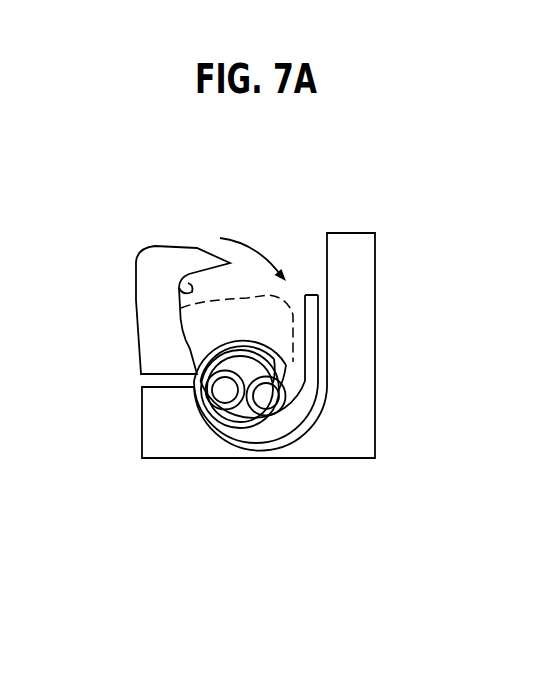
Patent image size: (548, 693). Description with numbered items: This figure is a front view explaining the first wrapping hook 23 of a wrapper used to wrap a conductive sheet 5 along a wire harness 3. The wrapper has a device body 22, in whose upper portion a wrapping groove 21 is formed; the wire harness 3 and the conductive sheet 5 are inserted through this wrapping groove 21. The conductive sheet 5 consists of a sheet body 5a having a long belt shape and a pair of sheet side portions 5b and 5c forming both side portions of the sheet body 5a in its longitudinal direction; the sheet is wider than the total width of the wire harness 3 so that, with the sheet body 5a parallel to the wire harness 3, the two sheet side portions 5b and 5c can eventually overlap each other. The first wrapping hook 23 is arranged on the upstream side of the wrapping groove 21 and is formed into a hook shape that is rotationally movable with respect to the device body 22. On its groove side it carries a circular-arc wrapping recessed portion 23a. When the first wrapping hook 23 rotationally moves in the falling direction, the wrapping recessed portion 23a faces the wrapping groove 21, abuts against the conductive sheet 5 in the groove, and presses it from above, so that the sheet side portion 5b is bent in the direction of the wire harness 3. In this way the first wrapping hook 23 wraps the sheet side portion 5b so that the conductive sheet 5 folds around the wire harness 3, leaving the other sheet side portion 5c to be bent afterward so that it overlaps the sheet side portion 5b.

The wire harness 3 is at (264, 404).
The conductive sheet 5 is at (273, 428).
The sheet body 5a is at (206, 345).
The sheet side portion 5b is at (277, 363).
The sheet side portion 5c is at (316, 312).
The wrapping groove 21 is at (325, 390).
The device body 22 is at (343, 458).
The first wrapping hook 23 is at (181, 252).
The wrapping recessed portion 23a is at (177, 287).